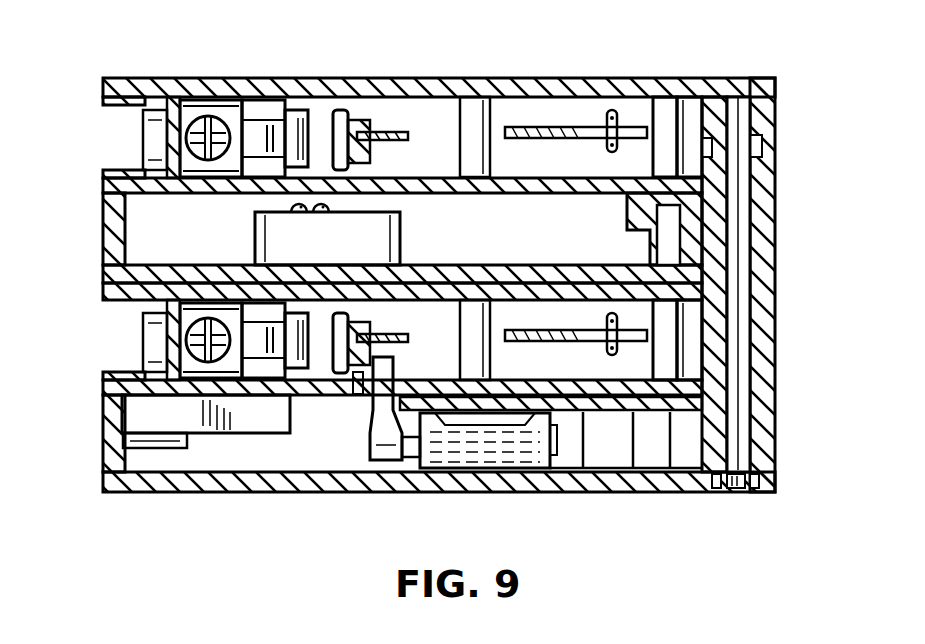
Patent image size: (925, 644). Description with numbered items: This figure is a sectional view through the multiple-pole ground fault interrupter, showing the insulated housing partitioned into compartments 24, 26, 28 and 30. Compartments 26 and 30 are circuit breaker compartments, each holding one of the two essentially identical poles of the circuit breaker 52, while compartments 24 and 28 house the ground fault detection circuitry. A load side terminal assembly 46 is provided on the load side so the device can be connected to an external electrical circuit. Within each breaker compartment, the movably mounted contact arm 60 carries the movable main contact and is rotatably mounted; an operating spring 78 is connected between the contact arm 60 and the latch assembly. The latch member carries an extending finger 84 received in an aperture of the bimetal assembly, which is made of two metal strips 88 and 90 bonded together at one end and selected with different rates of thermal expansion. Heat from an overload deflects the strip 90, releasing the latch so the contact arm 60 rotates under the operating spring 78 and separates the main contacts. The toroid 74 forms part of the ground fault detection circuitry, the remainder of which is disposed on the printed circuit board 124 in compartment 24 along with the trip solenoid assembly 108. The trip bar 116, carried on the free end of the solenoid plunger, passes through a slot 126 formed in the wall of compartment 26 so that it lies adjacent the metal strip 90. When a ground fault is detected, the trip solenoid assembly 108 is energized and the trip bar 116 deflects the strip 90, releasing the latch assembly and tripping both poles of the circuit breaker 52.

The circuit breaker 52 is at (788, 124).
The compartment 30 is at (687, 150).
The compartment 28 is at (618, 230).
The compartment 26 is at (640, 360).
The compartment 24 is at (673, 443).
The load side terminal assembly 46 is at (208, 100).
The metal strip 88 is at (339, 108).
The metal strip 90 is at (366, 118).
The extending finger 84 is at (406, 130).
The movably mounted contact arm 60 is at (543, 127).
The operating spring 78 is at (615, 115).
The toroid 74 is at (263, 234).
The printed circuit board 124 is at (650, 408).
The trip bar 116 is at (369, 420).
The slot 126 is at (352, 378).
The trip solenoid assembly 108 is at (487, 452).